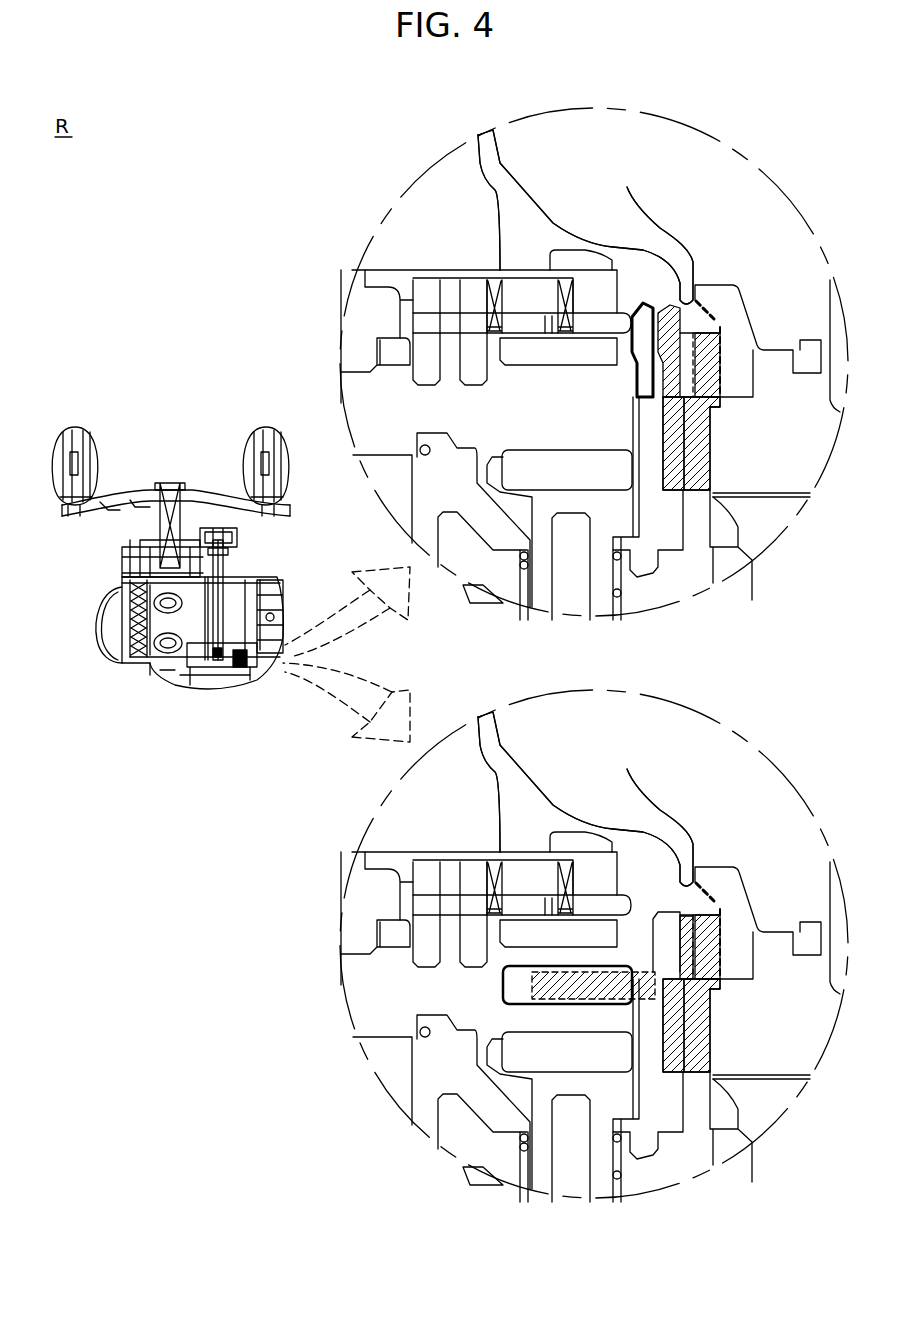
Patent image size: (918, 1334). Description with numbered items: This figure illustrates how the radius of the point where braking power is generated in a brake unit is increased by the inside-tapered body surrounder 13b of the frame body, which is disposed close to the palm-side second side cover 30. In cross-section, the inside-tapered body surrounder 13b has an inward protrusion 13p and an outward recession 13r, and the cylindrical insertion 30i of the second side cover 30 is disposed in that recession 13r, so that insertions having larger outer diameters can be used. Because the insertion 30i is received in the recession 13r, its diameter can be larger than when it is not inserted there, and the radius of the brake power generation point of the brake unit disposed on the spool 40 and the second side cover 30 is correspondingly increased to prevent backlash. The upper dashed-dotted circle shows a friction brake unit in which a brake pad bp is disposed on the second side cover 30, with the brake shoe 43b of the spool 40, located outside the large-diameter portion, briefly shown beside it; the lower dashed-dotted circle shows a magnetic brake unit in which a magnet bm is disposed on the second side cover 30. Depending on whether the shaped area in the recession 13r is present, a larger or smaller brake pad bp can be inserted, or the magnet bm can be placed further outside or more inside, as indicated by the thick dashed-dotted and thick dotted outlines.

The brake shoe 43b is at (627, 187).
The spool 40 is at (585, 508).
The brake pad bp is at (670, 303).
The magnet bm is at (640, 966).
The inside-tapered body surrounder 13b is at (772, 213).
The inward protrusion 13p is at (708, 290).
The outward recession 13r is at (708, 325).
The insertion 30i is at (650, 442).
The second side cover 30 is at (739, 734).